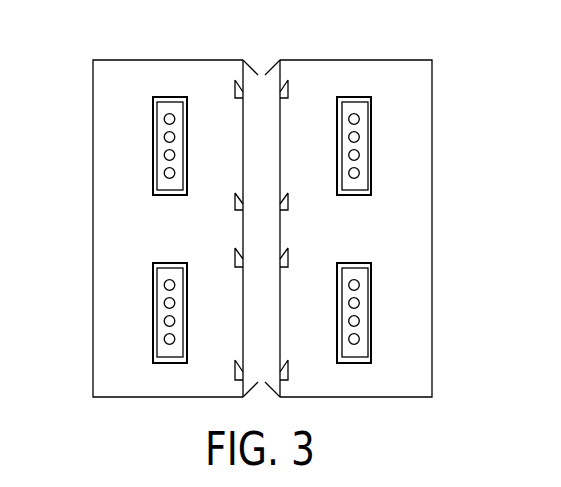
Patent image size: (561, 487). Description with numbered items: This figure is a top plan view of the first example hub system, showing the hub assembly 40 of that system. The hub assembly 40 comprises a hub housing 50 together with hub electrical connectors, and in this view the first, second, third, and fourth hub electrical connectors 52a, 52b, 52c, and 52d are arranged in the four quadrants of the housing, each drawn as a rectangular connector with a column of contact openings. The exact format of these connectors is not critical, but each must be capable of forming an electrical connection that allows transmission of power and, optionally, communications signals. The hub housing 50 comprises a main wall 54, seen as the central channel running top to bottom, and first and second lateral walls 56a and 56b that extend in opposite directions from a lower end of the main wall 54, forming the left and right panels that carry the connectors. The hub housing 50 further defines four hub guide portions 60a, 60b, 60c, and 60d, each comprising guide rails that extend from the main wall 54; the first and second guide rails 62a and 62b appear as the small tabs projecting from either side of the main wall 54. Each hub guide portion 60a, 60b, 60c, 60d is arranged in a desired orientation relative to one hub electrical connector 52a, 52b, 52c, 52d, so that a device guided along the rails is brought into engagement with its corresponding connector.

The hub assembly 40 is at (487, 215).
The hub housing 50 is at (83, 426).
The first hub electrical connector 52a is at (112, 316).
The second hub electrical connector 52b is at (114, 150).
The third hub electrical connector 52c is at (417, 321).
The fourth hub electrical connector 52d is at (427, 142).
The main wall 54 is at (275, 83).
The first lateral wall 56a is at (122, 77).
The second lateral wall 56b is at (415, 78).
The first hub guide portion 60a is at (207, 370).
The second hub guide portion 60b is at (208, 93).
The third hub guide portion 60c is at (320, 351).
The fourth hub guide portion 60d is at (301, 173).
The first guide rail 62a is at (239, 367).
The second guide rail 62b is at (239, 258).